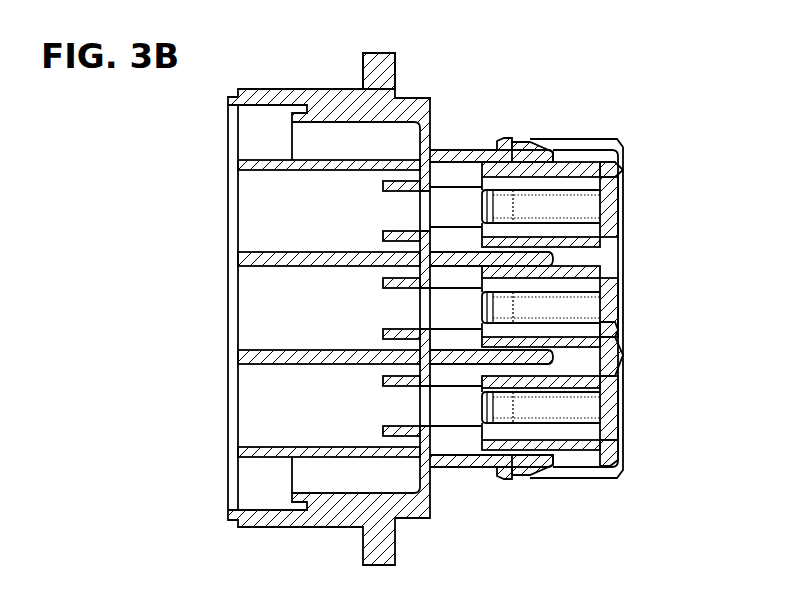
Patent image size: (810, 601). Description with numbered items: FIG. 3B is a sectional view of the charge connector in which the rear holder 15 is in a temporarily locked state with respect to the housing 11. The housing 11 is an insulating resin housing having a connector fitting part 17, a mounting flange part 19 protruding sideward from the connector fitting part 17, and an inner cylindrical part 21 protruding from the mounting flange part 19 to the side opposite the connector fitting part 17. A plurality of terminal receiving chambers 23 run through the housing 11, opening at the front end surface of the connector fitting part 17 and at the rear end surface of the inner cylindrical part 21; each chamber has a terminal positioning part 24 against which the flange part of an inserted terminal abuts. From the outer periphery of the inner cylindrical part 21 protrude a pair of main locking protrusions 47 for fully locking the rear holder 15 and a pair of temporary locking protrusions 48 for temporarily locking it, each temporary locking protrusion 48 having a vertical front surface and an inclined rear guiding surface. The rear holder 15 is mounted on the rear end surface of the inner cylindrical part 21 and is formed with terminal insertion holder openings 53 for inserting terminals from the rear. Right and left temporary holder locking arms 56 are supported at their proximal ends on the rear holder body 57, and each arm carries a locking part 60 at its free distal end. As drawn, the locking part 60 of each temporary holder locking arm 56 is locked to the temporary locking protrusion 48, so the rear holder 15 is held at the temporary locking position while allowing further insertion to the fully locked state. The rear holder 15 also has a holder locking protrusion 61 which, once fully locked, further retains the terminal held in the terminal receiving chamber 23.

The housing 11 is at (397, 53).
The rear holder 15 is at (625, 144).
The connector fitting part 17 is at (263, 88).
The mounting flange part 19 is at (372, 70).
The inner cylindrical part 21 is at (467, 148).
The terminal receiving chamber 23 is at (265, 204).
The terminal positioning part 24 is at (430, 181).
The main locking protrusion 47 is at (510, 6).
The temporary locking protrusion 48 is at (535, 139).
The terminal insertion holder opening 53 is at (612, 183).
The temporary holder locking arm 56 is at (577, 142).
The rear holder body 57 is at (626, 355).
The locking part 60 is at (502, 139).
The holder locking protrusion 61 is at (540, 207).